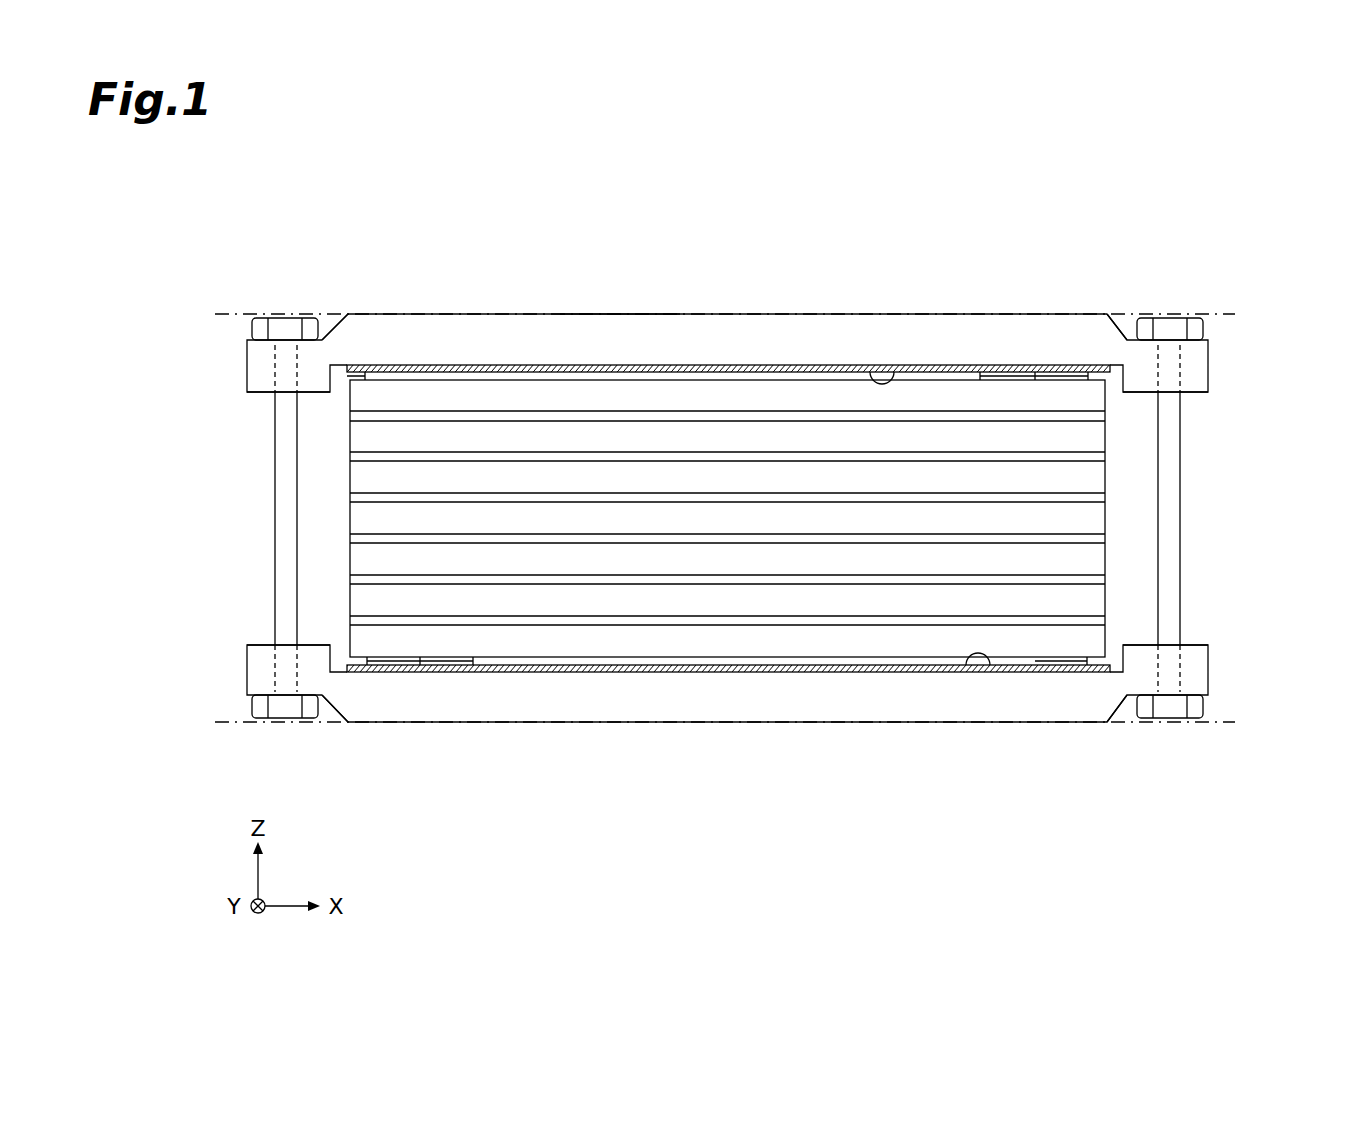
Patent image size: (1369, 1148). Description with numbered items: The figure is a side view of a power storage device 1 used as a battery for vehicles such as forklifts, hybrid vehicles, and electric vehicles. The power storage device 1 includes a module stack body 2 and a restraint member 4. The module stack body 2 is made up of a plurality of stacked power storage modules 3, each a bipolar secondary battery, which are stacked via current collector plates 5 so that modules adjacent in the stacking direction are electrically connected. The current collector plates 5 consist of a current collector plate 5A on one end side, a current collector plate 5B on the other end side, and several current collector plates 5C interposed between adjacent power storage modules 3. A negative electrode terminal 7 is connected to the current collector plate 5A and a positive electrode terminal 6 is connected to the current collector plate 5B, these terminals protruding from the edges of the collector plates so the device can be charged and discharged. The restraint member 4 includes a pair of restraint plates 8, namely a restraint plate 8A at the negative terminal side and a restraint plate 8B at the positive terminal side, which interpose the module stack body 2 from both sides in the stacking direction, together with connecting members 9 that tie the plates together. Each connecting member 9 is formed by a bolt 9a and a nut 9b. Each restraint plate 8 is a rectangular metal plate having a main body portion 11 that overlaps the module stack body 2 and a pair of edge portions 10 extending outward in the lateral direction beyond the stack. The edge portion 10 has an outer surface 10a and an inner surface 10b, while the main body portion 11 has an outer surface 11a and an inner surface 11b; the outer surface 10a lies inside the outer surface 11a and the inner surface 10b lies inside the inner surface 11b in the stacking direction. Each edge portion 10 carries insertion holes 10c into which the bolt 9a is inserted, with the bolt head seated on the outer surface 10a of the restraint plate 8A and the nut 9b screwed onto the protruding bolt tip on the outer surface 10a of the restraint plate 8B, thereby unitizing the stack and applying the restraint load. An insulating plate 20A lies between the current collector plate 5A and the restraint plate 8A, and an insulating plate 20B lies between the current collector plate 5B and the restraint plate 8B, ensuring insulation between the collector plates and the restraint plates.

The power storage device 1 is at (1170, 226).
The module stack body 2 is at (1110, 501).
The power storage module 3 is at (506, 398).
The restraint member 4 is at (727, 509).
The current collector plate 5 is at (727, 521).
The current collector plate 5A is at (950, 372).
The current collector plate 5B is at (492, 672).
The current collector plate 5C is at (798, 470).
The positive electrode terminal 6 is at (425, 672).
The negative electrode terminal 7 is at (1005, 372).
The restraint plate 8 is at (727, 509).
The restraint plate 8A is at (727, 509).
The restraint plate 8B is at (768, 722).
The connecting member 9 is at (262, 516).
The bolt 9a is at (285, 318).
The nut 9b is at (285, 718).
The edge portion 10 is at (258, 308).
The outer surface 10a is at (322, 338).
The inner surface 10b is at (262, 393).
The insertion hole 10c is at (280, 363).
The main body portion 11 is at (567, 308).
The outer surface 11a is at (617, 314).
The inner surface 11b is at (882, 372).
The insulating plate 20A is at (428, 365).
The insulating plate 20B is at (708, 672).